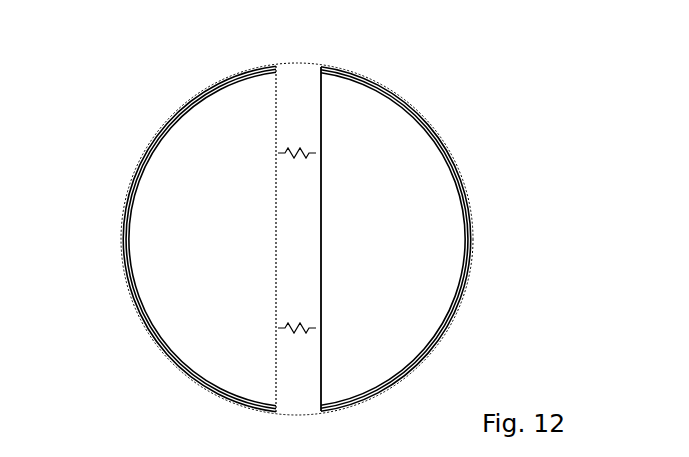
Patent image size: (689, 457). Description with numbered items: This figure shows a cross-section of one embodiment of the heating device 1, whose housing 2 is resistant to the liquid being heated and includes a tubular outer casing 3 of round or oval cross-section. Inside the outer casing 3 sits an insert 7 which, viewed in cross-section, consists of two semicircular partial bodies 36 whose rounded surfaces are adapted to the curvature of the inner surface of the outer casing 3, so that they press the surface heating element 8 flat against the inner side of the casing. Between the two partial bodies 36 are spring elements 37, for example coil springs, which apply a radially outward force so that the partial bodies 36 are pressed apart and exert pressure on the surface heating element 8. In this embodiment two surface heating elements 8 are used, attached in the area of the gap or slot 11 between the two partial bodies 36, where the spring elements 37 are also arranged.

The heating device 1 is at (138, 86).
The housing 2 is at (143, 340).
The outer casing 3 is at (135, 303).
The insert 7 is at (444, 159).
The surface heating element 8 is at (127, 242).
The slot 11 is at (297, 88).
The partial bodies 36 is at (187, 165).
The spring elements 37 is at (290, 313).